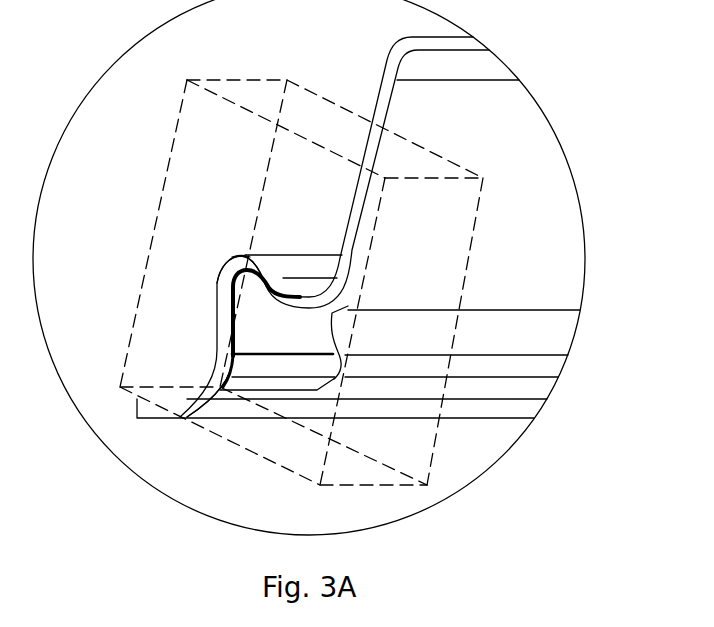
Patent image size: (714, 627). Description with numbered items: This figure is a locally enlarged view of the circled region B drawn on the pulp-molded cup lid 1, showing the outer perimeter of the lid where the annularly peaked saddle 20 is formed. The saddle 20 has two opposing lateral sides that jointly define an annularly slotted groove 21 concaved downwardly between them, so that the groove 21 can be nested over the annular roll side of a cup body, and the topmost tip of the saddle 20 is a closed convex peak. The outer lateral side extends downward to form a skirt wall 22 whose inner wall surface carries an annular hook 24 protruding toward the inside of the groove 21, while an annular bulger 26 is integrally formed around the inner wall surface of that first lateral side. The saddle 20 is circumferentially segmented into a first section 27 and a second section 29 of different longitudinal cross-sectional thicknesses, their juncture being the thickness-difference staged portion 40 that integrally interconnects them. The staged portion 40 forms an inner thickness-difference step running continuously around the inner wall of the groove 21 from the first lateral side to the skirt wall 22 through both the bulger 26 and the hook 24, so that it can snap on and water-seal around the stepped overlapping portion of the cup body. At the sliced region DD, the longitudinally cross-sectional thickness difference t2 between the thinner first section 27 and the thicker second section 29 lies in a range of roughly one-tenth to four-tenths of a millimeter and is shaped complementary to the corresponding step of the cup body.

The pulp-molded cup lid 1 is at (143, 78).
The sliced region DD is at (152, 167).
The circled region B is at (520, 460).
The annularly peaked saddle 20 is at (261, 247).
The annularly slotted groove 21 is at (249, 256).
The skirt wall 22 is at (197, 393).
The annular hook 24 is at (232, 358).
The annular bulger 26 is at (237, 271).
The first section 27 is at (200, 321).
The second section 29 is at (202, 327).
The thickness-difference staged portion 40 is at (221, 280).
The longitudinally cross-sectional thickness difference t2 is at (252, 298).